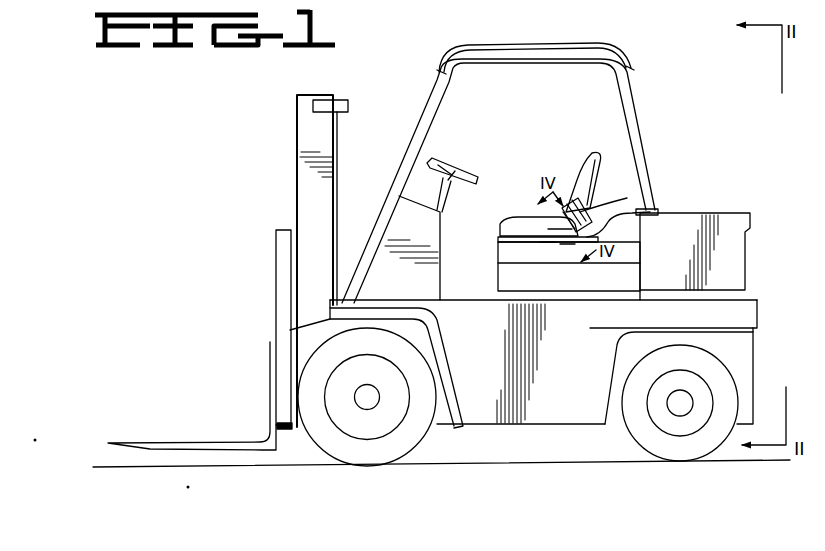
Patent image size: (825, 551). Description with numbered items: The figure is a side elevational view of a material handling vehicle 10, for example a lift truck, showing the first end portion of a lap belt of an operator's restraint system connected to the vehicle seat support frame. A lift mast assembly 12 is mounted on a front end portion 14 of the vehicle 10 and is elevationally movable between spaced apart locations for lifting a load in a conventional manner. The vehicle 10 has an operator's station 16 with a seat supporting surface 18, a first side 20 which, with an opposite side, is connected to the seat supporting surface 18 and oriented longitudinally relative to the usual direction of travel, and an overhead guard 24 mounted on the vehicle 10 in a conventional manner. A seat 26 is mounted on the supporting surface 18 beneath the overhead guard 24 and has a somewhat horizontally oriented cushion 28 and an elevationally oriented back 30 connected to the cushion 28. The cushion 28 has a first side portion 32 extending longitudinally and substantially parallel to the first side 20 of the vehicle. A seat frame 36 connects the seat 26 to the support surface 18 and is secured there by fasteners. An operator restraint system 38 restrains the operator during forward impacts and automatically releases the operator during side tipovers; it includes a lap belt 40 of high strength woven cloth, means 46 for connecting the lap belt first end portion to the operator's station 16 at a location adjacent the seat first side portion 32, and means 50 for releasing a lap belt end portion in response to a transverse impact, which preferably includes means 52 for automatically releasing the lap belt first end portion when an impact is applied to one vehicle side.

The material handling vehicle 10 is at (220, 128).
The lift mast assembly 12 is at (282, 203).
The front end portion 14 is at (300, 330).
The operator's station 16 is at (646, 90).
The seat supporting surface 18 is at (500, 236).
The first side 20 is at (590, 371).
The overhead guard 24 is at (623, 50).
The seat 26 is at (603, 176).
The seat cushion 28 is at (503, 218).
The seat back 30 is at (588, 163).
The first side portion of the seat cushion 32 is at (503, 228).
The seat frame 36 is at (636, 208).
The operator restraint system 38 is at (537, 147).
The lap belt 40 is at (584, 203).
The means for connecting the lap belt first end portion 46 is at (547, 245).
The means for releasing 50 is at (548, 226).
The means for automatically releasing the lap belt first end portion 52 is at (566, 247).